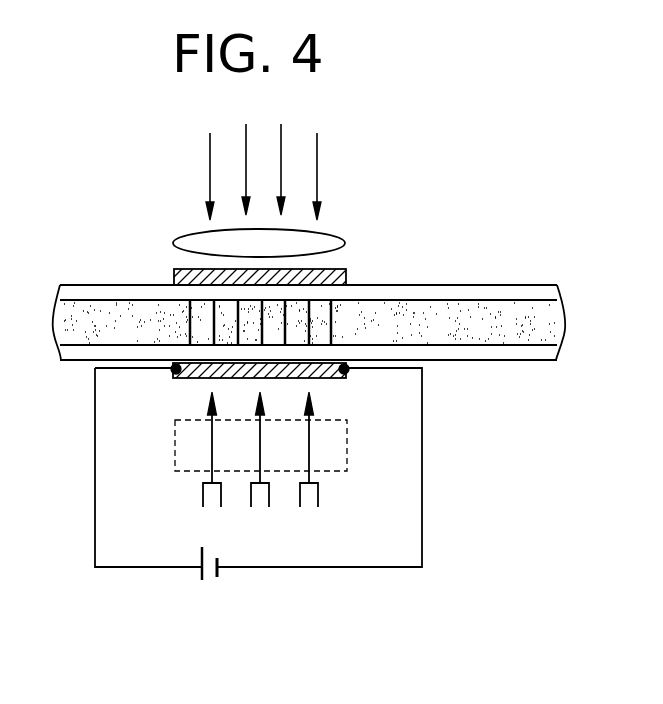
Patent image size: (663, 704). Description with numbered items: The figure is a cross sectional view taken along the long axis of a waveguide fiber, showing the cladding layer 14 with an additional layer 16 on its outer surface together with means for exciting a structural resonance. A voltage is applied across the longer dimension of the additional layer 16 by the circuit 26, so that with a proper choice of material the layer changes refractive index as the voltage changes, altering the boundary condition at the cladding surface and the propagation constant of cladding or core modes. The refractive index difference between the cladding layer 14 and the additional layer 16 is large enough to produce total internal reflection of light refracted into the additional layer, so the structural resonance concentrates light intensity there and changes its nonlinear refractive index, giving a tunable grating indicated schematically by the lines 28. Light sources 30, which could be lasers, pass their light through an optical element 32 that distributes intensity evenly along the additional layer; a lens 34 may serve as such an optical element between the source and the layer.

The cladding layer 14 is at (487, 352).
The additional layer 16 is at (348, 284).
The circuit 26 is at (422, 538).
The lines 28 is at (330, 319).
The light sources 30 is at (215, 505).
The optical element 32 is at (347, 456).
The lens 34 is at (337, 232).